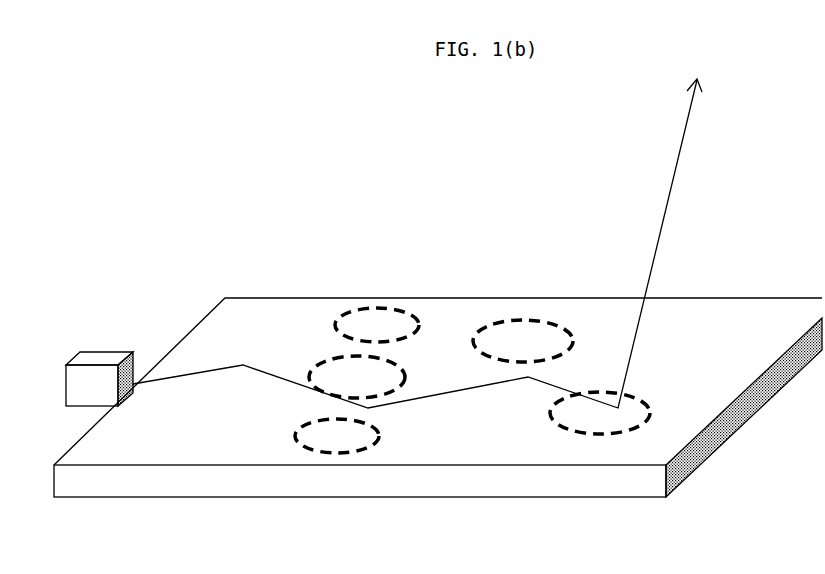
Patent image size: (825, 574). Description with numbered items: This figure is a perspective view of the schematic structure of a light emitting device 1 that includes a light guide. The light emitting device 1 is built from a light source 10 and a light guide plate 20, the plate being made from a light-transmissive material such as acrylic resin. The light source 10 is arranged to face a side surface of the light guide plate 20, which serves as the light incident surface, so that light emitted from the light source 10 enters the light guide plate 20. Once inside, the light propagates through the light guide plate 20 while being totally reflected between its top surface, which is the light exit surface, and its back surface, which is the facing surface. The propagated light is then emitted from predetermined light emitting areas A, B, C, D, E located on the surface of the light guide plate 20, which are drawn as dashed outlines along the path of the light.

The light emitting device 1 is at (310, 202).
The light source 10 is at (99, 352).
The light guide plate 20 is at (262, 483).
The light emitting area A is at (419, 326).
The light emitting area B is at (405, 374).
The light emitting area C is at (379, 437).
The light emitting area D is at (577, 338).
The light emitting area E is at (651, 403).